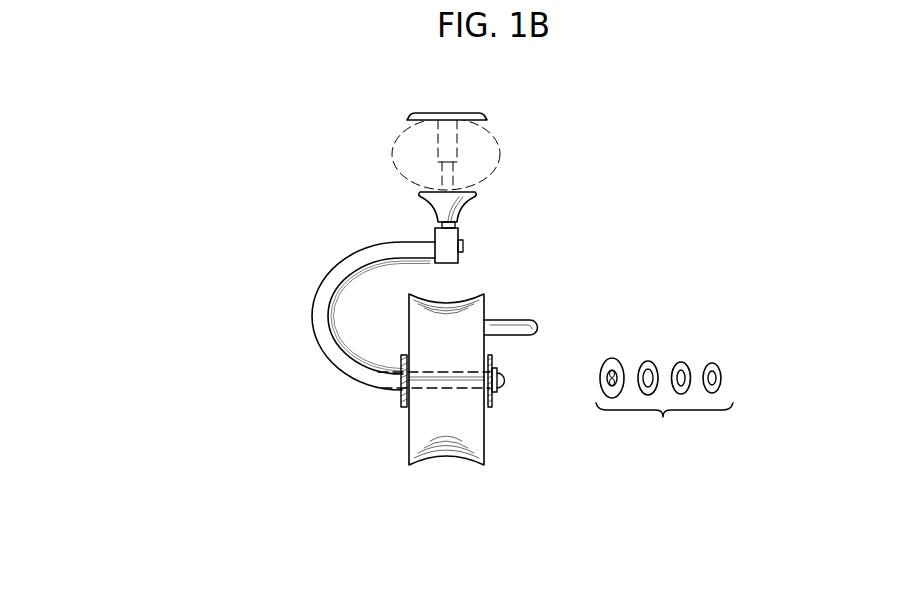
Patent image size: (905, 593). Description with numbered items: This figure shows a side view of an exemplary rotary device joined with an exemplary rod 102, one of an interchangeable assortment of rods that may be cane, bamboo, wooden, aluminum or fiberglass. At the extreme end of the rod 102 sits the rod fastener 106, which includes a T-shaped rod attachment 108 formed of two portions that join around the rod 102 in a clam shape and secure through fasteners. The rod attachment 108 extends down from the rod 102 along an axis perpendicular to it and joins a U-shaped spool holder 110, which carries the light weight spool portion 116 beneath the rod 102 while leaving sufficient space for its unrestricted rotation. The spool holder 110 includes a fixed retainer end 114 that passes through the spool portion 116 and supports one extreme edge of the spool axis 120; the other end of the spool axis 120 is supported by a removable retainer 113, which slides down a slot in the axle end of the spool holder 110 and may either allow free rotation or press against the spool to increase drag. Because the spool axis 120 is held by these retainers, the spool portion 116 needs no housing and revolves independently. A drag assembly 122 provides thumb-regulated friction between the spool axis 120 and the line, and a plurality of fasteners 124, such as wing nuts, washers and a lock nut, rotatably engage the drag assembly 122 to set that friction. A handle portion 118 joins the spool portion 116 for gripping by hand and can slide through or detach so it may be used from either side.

The rod 102 is at (495, 128).
The T-shaped rod attachment 108 is at (443, 112).
The rod fastener 106 is at (432, 196).
The spool holder 110 is at (313, 330).
The fixed retainer end 114 is at (403, 384).
The spool portion 116 is at (409, 441).
The spool axis 120 is at (445, 383).
The handle portion 118 is at (510, 320).
The drag assembly 122 is at (498, 390).
The removable retainer 113 is at (615, 357).
The plurality of fasteners 124 is at (664, 407).